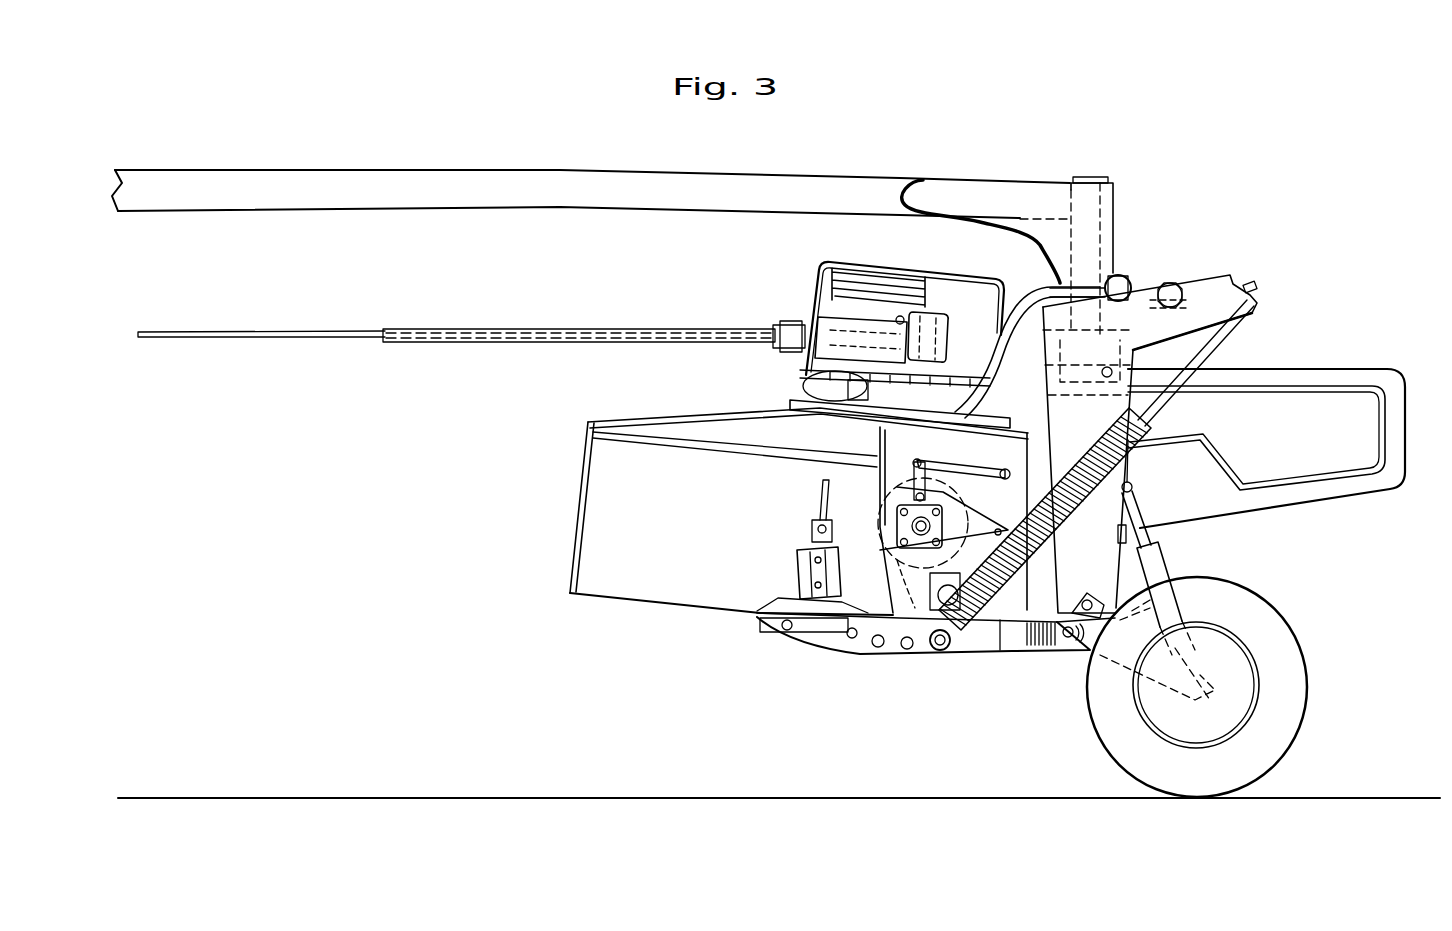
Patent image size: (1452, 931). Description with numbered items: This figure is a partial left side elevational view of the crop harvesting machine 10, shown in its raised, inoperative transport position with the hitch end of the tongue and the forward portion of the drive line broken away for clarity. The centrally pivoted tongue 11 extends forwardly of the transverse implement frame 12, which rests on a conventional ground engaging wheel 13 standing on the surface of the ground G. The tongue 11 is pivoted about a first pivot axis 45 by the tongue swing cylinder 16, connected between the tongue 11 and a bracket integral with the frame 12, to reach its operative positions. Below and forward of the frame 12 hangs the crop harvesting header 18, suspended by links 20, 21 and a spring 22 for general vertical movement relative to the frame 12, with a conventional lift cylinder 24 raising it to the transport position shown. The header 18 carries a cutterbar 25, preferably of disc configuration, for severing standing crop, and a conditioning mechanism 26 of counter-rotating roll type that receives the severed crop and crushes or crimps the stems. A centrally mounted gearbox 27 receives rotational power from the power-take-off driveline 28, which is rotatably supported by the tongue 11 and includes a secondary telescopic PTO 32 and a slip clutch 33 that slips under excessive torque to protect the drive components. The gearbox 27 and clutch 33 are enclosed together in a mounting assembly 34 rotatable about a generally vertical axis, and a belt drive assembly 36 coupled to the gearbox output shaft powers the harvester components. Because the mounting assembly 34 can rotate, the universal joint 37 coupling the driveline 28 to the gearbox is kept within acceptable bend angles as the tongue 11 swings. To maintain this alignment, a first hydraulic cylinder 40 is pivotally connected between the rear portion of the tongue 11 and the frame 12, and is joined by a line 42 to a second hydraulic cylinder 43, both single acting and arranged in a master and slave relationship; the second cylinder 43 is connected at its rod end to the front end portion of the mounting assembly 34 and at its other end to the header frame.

The crop harvesting machine 10 is at (423, 110).
The tongue 11 is at (628, 186).
The transverse implement frame 12 is at (1213, 292).
The ground engaging wheel 13 is at (1272, 602).
The tongue swing cylinder 16 is at (1172, 288).
The crop harvesting header 18 is at (702, 661).
The link 20 is at (1020, 640).
The link 21 is at (1056, 377).
The spring 22 is at (1100, 448).
The lift cylinder 24 is at (1155, 558).
The cutterbar 25 is at (763, 582).
The conditioning mechanism 26 is at (898, 603).
The gearbox 27 is at (934, 298).
The power-take-off driveline 28 is at (300, 333).
The secondary telescopic PTO 32 is at (553, 330).
The slip clutch 33 is at (845, 340).
The mounting assembly 34 is at (961, 318).
The belt drive assembly 36 is at (818, 278).
The universal joint 37 is at (780, 331).
The first hydraulic cylinder 40 is at (1125, 283).
The line 42 is at (1022, 300).
The second hydraulic cylinder 43 is at (790, 398).
The first pivot axis 45 is at (1096, 178).